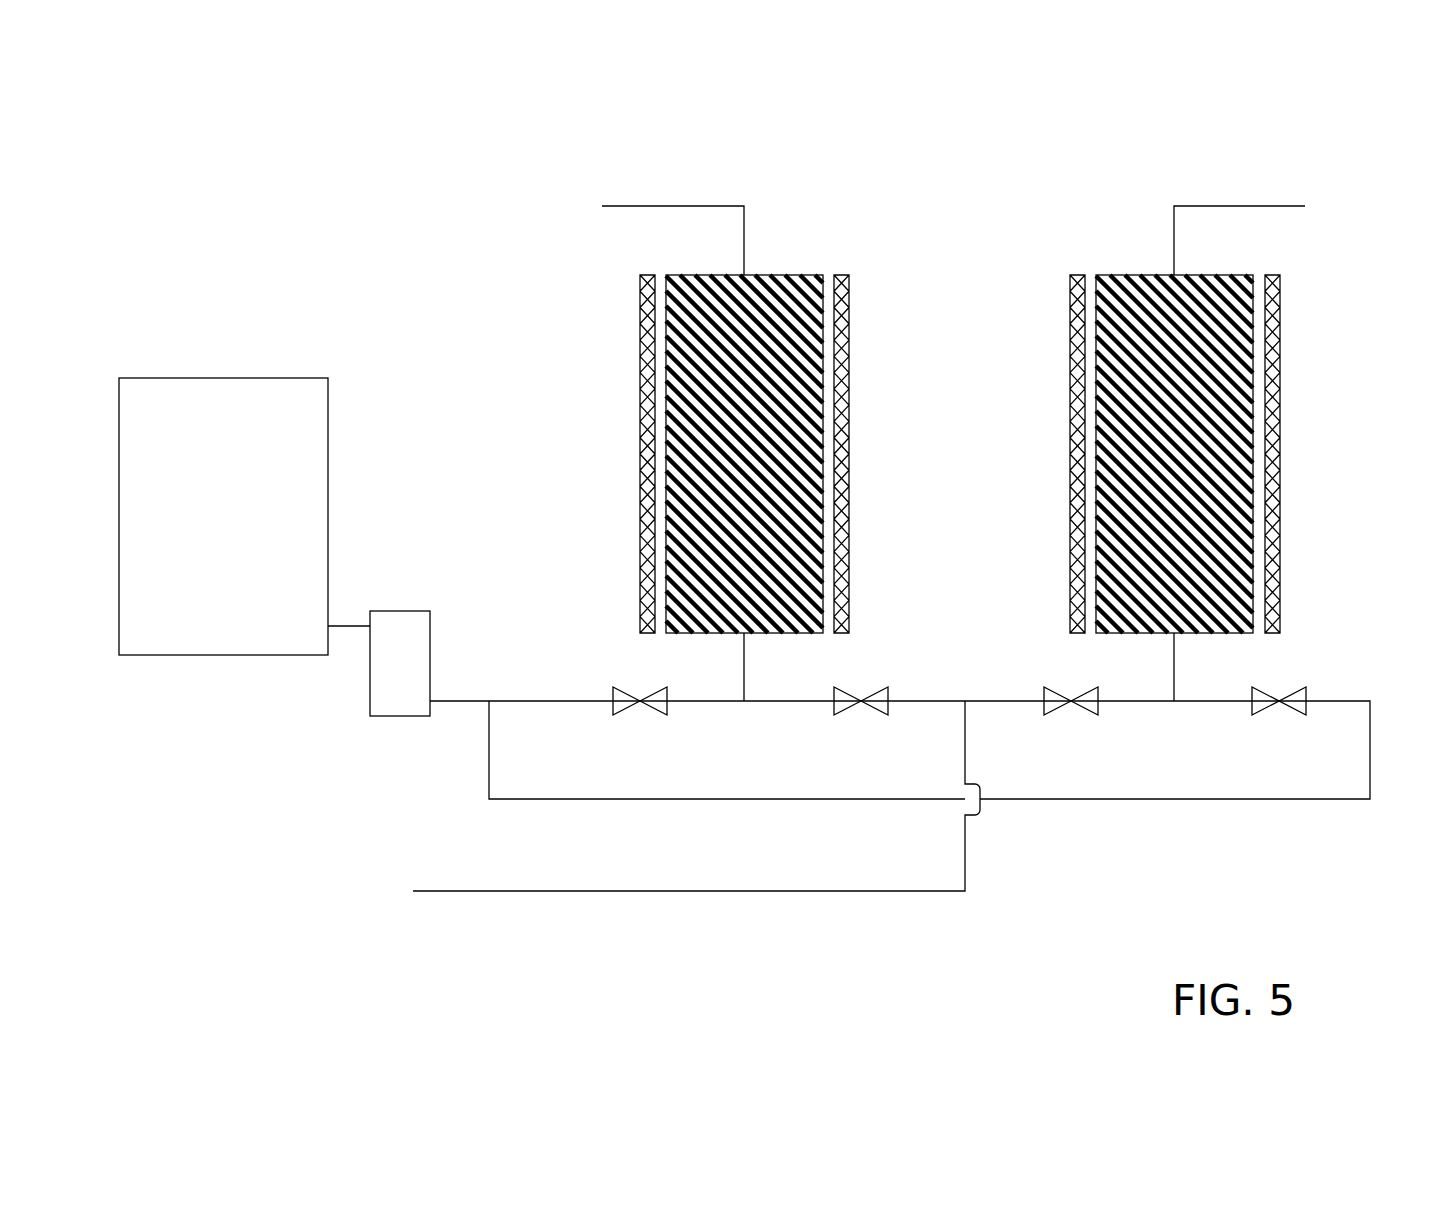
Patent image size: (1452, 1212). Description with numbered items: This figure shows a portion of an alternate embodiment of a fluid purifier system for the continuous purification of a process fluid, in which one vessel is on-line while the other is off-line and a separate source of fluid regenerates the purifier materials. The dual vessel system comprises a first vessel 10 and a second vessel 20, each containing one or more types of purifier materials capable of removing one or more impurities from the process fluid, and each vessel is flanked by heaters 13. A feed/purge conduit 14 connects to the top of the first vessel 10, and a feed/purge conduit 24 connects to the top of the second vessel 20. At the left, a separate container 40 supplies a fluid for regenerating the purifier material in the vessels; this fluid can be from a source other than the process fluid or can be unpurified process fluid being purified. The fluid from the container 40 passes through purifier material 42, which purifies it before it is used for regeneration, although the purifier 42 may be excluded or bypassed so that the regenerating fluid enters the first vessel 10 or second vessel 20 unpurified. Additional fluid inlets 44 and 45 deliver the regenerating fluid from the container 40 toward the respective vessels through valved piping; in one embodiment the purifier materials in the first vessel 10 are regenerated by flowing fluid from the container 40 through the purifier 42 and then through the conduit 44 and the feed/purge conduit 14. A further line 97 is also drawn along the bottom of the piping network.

The first vessel 10 is at (785, 275).
The second vessel 20 is at (1135, 275).
The heaters 13 is at (640, 553).
The feed/purge conduit 14 is at (640, 192).
The feed/purge conduit 24 is at (1225, 193).
The container 40 is at (223, 516).
The purifier material 42 is at (379, 663).
The fluid inlet 44 is at (562, 690).
The fluid inlet 45 is at (1352, 688).
The purge line 97 is at (443, 868).